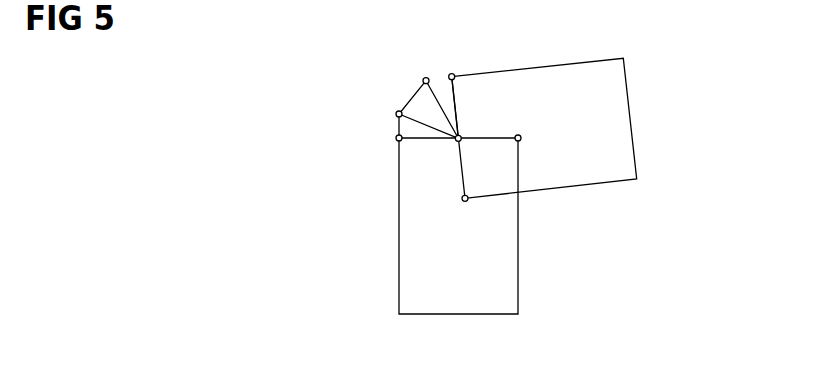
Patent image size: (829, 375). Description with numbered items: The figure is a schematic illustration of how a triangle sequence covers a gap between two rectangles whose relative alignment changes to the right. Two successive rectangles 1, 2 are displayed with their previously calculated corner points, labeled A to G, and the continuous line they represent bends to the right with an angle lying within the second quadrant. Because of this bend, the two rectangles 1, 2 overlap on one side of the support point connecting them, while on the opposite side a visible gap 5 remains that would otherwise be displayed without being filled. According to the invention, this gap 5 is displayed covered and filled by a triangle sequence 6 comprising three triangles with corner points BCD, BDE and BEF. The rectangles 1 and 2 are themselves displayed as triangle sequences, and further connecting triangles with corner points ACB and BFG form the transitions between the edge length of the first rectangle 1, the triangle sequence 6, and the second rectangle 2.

The first rectangle 1 is at (420, 220).
The second rectangle 2 is at (565, 166).
The gap 5 is at (446, 123).
The triangle sequence 6 is at (405, 90).